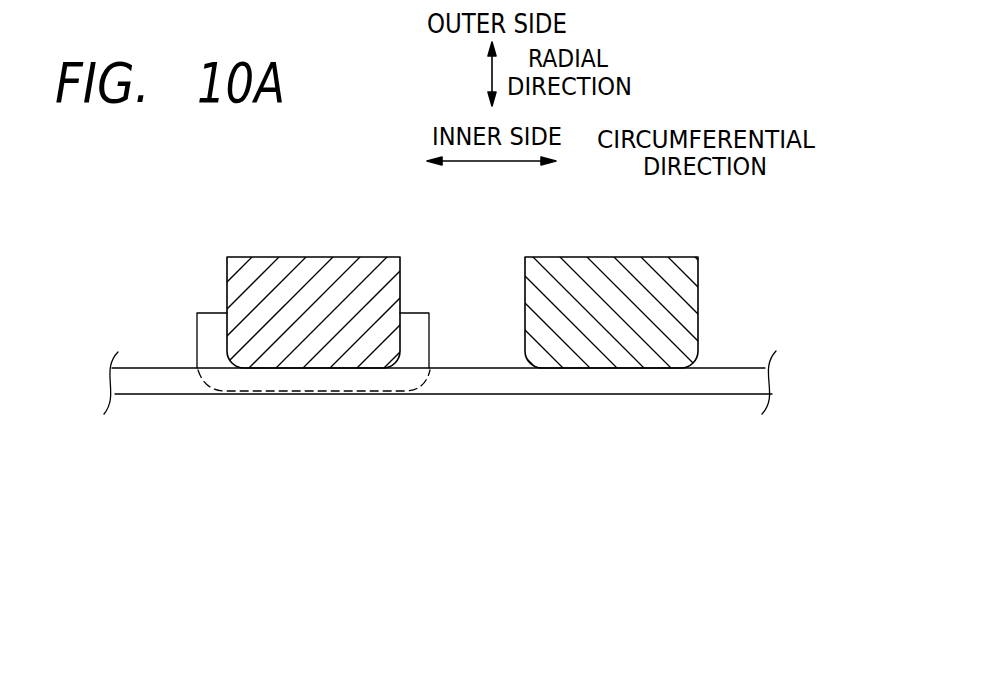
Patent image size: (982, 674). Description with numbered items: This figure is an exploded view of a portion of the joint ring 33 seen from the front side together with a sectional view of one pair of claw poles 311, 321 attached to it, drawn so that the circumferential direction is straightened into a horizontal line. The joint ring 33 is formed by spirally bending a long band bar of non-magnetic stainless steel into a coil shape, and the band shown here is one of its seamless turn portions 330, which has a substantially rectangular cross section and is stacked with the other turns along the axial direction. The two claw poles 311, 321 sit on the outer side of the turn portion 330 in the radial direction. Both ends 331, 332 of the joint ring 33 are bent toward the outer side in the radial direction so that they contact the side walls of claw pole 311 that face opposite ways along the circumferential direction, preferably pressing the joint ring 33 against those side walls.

The joint ring 33 is at (440, 423).
The turn portion 330 is at (463, 382).
The end of the joint ring 331 is at (207, 333).
The end of the joint ring 332 is at (415, 323).
The claw pole 311 is at (320, 282).
The claw pole 321 is at (620, 285).